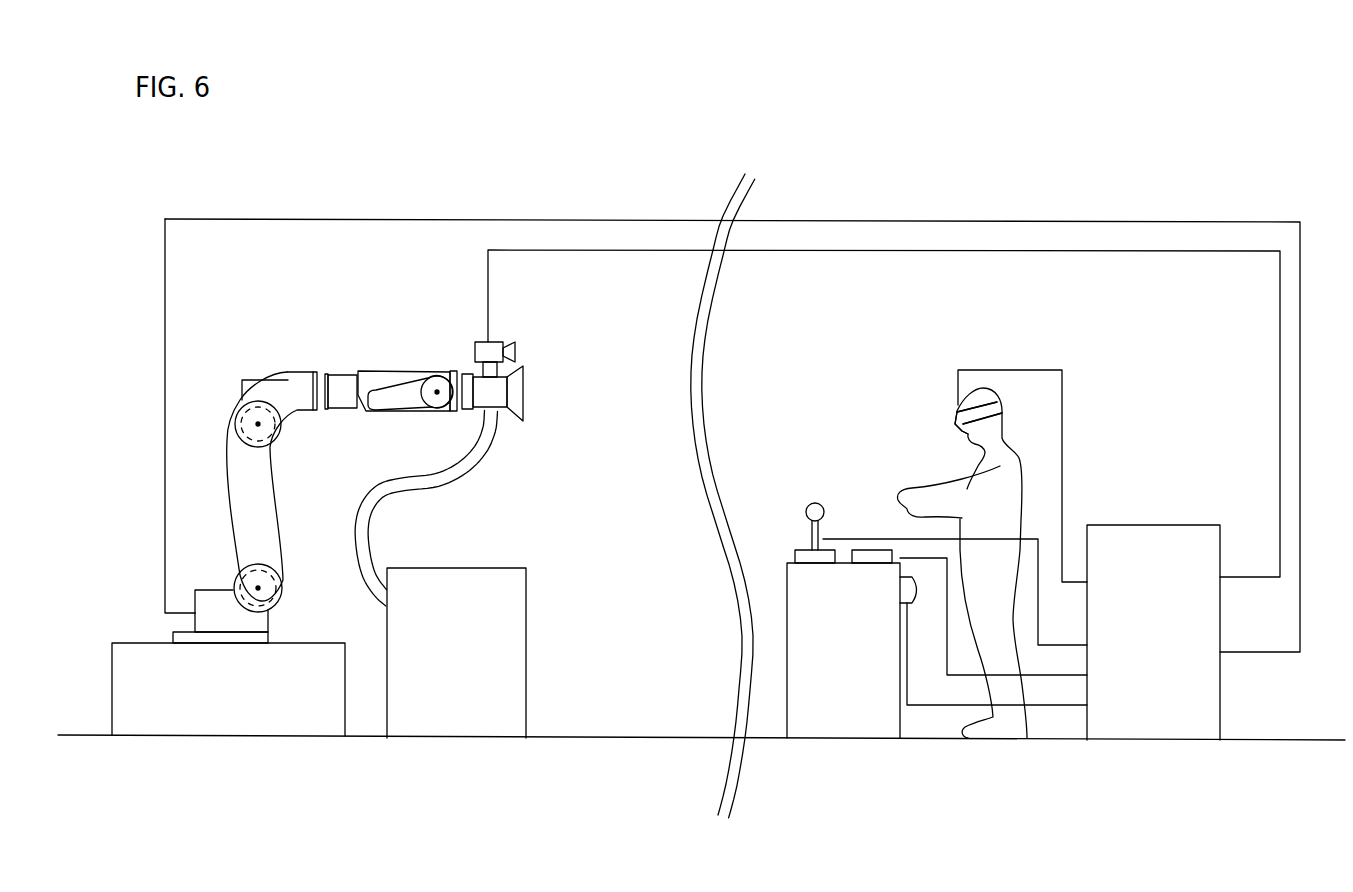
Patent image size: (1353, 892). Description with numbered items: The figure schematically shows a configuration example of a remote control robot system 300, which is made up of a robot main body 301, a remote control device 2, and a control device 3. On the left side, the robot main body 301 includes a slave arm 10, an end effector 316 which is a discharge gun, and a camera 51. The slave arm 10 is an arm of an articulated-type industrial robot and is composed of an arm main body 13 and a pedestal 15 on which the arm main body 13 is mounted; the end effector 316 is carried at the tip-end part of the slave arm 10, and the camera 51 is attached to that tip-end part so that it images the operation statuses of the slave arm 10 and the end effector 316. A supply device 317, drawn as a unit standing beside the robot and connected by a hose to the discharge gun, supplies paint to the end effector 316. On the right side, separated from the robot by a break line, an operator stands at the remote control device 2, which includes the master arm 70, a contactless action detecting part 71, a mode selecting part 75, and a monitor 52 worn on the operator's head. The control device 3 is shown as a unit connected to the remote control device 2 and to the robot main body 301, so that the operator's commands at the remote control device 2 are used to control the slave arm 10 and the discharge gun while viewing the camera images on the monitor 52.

The remote control robot system 300 is at (1200, 152).
The robot main body 301 is at (262, 328).
The slave arm 10 is at (327, 570).
The arm main body 13 is at (249, 494).
The pedestal 15 is at (293, 653).
The camera 51 is at (478, 344).
The end effector 316 is at (503, 403).
The supply device 317 is at (513, 641).
The remote control device 2 is at (810, 434).
The monitor 52 is at (953, 425).
The master arm 70 is at (803, 547).
The contactless action detecting part 71 is at (870, 560).
The mode selecting part 75 is at (907, 590).
The control device 3 is at (1158, 543).